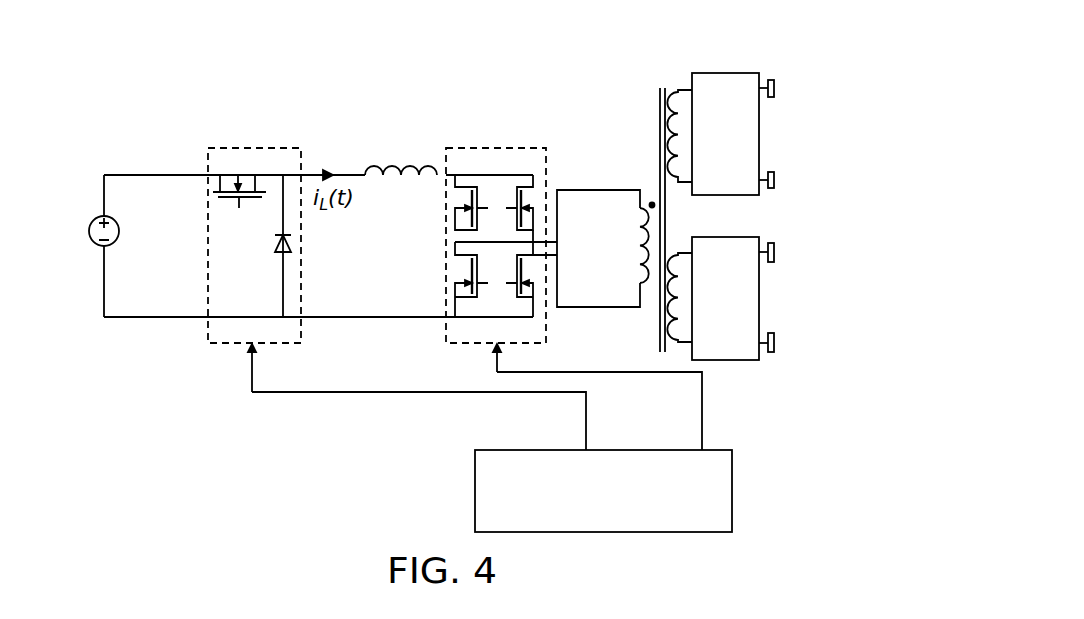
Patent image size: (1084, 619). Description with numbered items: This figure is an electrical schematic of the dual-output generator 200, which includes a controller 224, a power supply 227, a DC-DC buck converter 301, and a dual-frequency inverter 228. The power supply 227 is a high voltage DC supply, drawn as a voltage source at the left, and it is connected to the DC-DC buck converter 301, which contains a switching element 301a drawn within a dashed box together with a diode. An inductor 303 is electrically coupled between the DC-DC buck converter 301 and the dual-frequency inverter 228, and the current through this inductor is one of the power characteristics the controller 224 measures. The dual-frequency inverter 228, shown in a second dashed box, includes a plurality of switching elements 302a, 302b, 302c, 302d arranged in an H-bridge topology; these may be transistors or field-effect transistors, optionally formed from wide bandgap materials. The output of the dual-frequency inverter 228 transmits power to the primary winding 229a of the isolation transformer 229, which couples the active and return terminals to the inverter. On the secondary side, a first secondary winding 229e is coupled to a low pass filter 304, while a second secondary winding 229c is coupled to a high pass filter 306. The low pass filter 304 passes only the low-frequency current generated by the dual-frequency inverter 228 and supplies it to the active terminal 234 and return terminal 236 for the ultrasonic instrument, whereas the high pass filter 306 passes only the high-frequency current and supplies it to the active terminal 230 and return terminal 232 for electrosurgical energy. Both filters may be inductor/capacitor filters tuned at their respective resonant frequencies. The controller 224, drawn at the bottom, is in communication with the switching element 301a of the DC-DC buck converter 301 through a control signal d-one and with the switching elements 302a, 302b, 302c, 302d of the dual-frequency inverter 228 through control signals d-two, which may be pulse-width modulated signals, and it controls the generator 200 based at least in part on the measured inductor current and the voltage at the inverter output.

The generator 200 is at (141, 86).
The power supply 227 is at (97, 216).
The DC-DC buck converter 301 is at (268, 88).
The switching element 301a is at (264, 194).
The inductor 303 is at (368, 168).
The dual-frequency inverter 228 is at (462, 147).
The switching element 302a is at (455, 238).
The switching element 302b is at (455, 296).
The switching element 302c is at (537, 209).
The switching element 302d is at (537, 307).
The isolation transformer 229 is at (663, 76).
The primary winding 229a is at (640, 190).
The transformer secondary winding (low pass) 229e is at (683, 89).
The second secondary winding 229c is at (683, 252).
The low pass filter 304 is at (760, 131).
The active terminal 234 is at (774, 80).
The return terminal 236 is at (775, 178).
The high pass filter 306 is at (760, 293).
The active terminal 230 is at (774, 251).
The return terminal 232 is at (774, 341).
The controller 224 is at (726, 448).